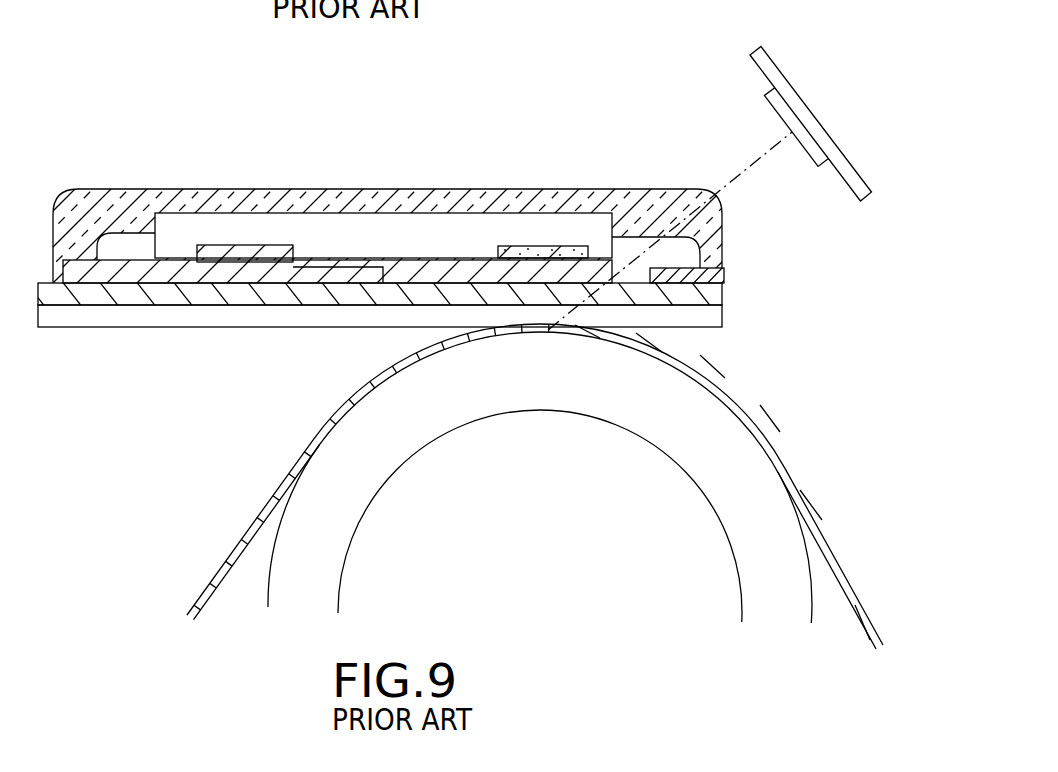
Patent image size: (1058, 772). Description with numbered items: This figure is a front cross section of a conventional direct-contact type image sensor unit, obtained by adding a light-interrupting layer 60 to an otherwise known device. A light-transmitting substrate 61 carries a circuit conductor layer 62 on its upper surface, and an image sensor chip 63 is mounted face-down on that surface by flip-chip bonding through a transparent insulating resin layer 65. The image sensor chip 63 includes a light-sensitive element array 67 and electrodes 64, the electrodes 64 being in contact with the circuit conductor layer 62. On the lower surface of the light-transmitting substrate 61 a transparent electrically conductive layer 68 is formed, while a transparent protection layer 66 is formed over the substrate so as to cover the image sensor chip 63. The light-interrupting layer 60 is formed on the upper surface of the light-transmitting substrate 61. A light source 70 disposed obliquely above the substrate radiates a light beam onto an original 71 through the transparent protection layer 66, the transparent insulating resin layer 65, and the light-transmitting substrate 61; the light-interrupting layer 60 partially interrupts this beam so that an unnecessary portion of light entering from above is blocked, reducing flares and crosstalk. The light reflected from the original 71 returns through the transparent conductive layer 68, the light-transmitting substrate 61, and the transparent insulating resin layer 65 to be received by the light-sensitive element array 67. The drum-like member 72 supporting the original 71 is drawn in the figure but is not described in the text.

The light-interrupting layer 60 is at (703, 257).
The light-transmitting substrate 61 is at (717, 293).
The circuit conductor layer 62 is at (70, 280).
The image sensor chip 63 is at (318, 232).
The electrodes 64 is at (250, 248).
The transparent insulating resin layer 65 is at (435, 262).
The transparent protection layer 66 is at (423, 200).
The light-sensitive element array 67 is at (547, 246).
The transparent electrically conductive layer 68 is at (717, 318).
The light source 70 is at (762, 55).
The original 71 is at (252, 530).
The drum roller 72 is at (770, 530).